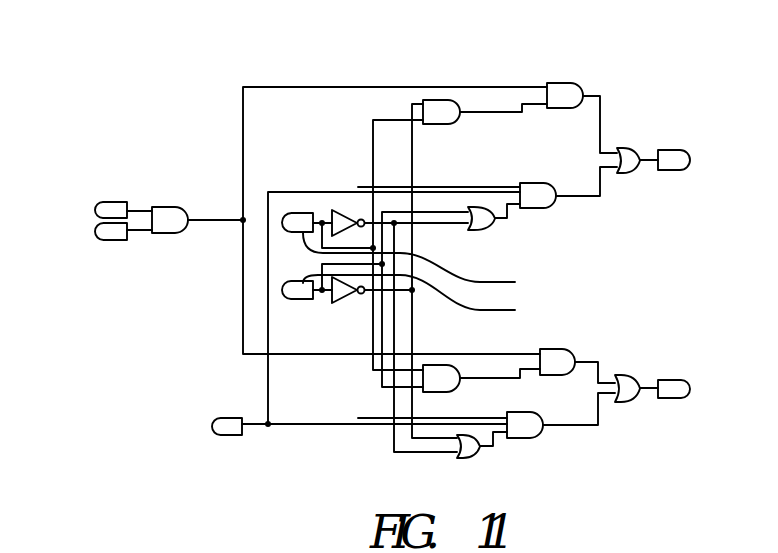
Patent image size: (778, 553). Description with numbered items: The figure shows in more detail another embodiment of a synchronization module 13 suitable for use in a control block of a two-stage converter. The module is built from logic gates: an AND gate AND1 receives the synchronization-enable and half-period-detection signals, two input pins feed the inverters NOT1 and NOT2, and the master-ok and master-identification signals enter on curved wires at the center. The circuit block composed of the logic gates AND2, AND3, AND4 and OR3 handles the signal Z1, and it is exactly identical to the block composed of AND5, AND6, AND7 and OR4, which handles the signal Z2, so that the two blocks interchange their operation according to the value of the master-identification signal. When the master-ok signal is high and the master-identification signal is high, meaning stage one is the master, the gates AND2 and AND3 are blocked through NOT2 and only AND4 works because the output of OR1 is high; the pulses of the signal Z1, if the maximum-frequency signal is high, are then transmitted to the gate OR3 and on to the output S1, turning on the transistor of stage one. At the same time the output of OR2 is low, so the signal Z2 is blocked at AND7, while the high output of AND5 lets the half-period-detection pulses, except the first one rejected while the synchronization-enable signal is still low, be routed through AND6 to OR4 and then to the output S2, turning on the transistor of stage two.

The synchronization module 13 is at (366, 247).
The AND gate AND1 is at (178, 236).
The AND gate AND2 is at (450, 125).
The AND gate AND3 is at (561, 110).
The AND gate AND4 is at (549, 210).
The AND gate AND5 is at (454, 393).
The AND gate AND6 is at (564, 376).
The AND gate AND7 is at (536, 439).
The OR gate OR1 is at (473, 230).
The OR gate OR2 is at (458, 460).
The OR gate OR3 is at (626, 149).
The OR gate OR4 is at (627, 398).
The inverter NOT1 is at (341, 214).
The inverter NOT2 is at (337, 302).
The signal S1 is at (677, 165).
The signal S2 is at (669, 378).
The signal Z1 is at (429, 180).
The signal Z2 is at (425, 408).